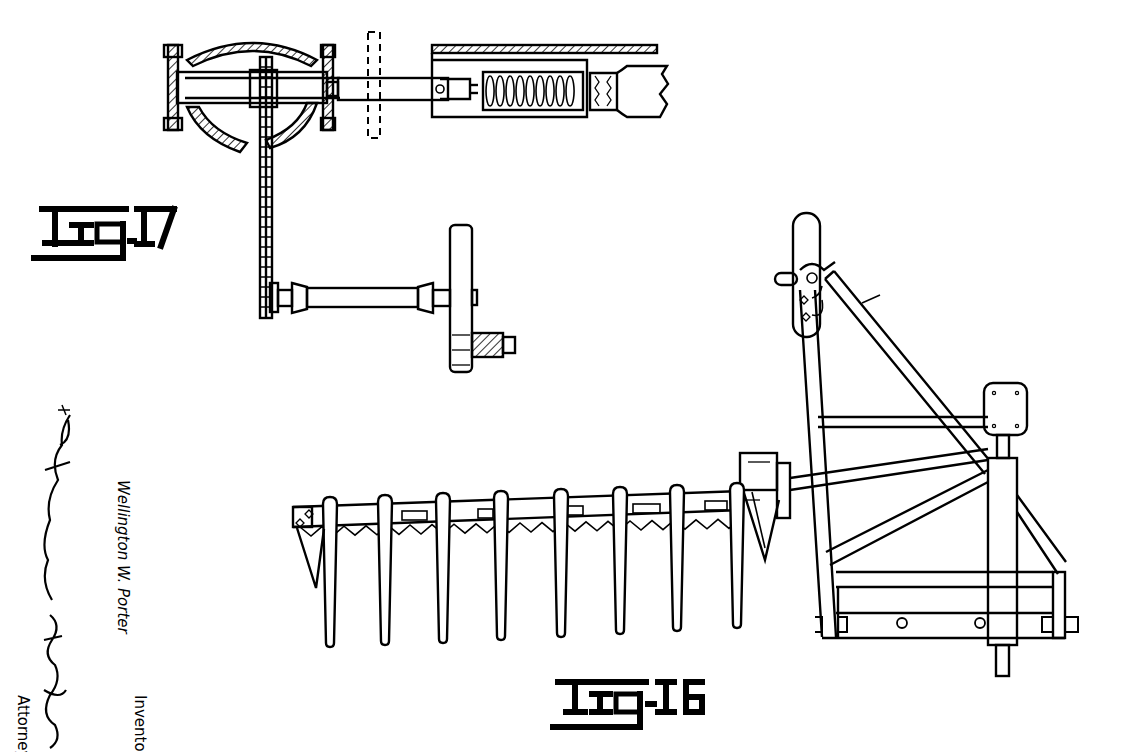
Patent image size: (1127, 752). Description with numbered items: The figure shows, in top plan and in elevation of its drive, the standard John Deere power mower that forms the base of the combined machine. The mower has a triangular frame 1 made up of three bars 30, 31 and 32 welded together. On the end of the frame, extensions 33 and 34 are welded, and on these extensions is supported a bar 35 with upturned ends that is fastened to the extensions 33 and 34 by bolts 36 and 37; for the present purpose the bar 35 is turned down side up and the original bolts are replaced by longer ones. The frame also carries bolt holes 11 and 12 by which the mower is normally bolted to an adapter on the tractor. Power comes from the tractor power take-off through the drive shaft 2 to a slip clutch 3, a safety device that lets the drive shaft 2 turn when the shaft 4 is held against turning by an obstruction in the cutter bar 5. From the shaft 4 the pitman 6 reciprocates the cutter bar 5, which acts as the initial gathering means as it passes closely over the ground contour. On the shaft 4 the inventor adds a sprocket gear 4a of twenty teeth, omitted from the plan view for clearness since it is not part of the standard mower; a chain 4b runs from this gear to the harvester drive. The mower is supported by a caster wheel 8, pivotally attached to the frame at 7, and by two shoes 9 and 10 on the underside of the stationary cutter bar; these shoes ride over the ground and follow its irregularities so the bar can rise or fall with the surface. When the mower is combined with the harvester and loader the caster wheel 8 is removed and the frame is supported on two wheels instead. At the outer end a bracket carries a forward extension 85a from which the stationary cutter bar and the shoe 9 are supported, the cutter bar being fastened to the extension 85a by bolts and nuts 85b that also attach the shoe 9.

In FIG. 16, the triangular frame 1 is at (1040, 523).
In FIG. 17, the drive shaft 2 is at (648, 97).
In FIG. 16, the drive shaft 2 is at (1010, 668).
In FIG. 17, the slip clutch 3 is at (552, 68).
In FIG. 16, the slip clutch 3 is at (1020, 488).
In FIG. 17, the shaft 4 is at (398, 104).
In FIG. 16, the shaft 4 is at (1012, 449).
In FIG. 17, the sprocket gear 4a is at (382, 50).
In FIG. 17, the drive chain 4b is at (268, 60).
In FIG. 16, the cutter bar 5 is at (589, 497).
In FIG. 17, the pitman 6 is at (493, 357).
In FIG. 16, the pitman 6 is at (880, 474).
In FIG. 16, the pivot 7 is at (820, 274).
In FIG. 16, the caster wheel 8 is at (822, 222).
In FIG. 16, the shoe 9 is at (310, 545).
In FIG. 16, the shoe 10 is at (771, 552).
In FIG. 16, the bolt hole 11 is at (899, 632).
In FIG. 16, the bolt hole 12 is at (977, 632).
In FIG. 16, the bar 30 is at (912, 578).
In FIG. 16, the bar 31 is at (804, 358).
In FIG. 16, the bar 32 is at (890, 338).
In FIG. 16, the extension 33 is at (822, 598).
In FIG. 16, the extension 34 is at (1066, 606).
In FIG. 16, the bar 35 is at (936, 640).
In FIG. 16, the bolt 36 is at (818, 628).
In FIG. 16, the bolt 37 is at (1075, 630).
In FIG. 16, the forward extension 85a is at (292, 522).
In FIG. 16, the bolts and nuts 85b is at (299, 518).